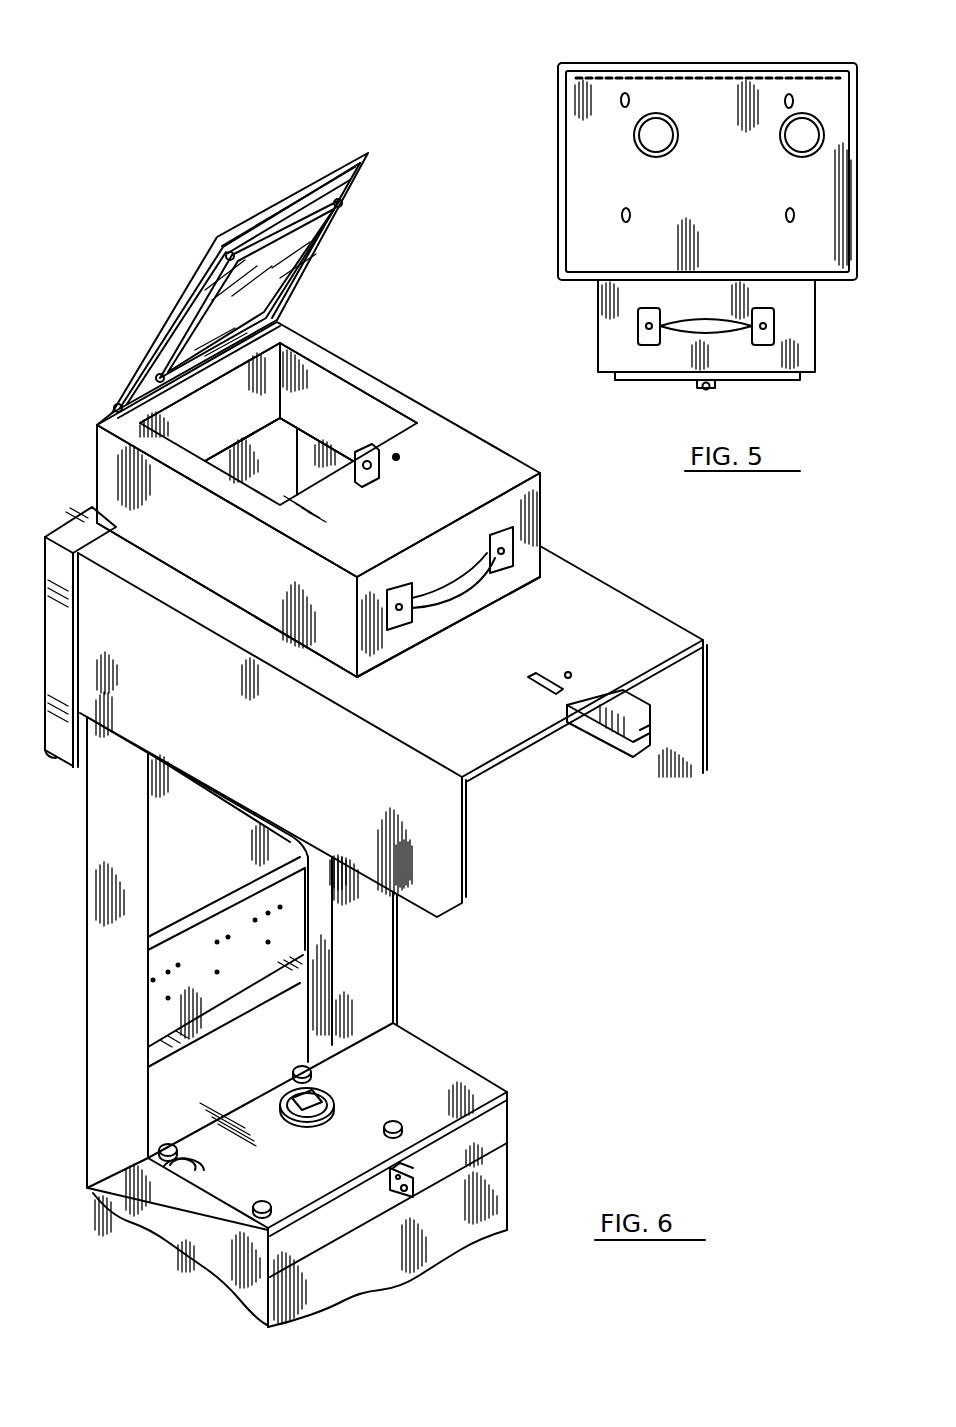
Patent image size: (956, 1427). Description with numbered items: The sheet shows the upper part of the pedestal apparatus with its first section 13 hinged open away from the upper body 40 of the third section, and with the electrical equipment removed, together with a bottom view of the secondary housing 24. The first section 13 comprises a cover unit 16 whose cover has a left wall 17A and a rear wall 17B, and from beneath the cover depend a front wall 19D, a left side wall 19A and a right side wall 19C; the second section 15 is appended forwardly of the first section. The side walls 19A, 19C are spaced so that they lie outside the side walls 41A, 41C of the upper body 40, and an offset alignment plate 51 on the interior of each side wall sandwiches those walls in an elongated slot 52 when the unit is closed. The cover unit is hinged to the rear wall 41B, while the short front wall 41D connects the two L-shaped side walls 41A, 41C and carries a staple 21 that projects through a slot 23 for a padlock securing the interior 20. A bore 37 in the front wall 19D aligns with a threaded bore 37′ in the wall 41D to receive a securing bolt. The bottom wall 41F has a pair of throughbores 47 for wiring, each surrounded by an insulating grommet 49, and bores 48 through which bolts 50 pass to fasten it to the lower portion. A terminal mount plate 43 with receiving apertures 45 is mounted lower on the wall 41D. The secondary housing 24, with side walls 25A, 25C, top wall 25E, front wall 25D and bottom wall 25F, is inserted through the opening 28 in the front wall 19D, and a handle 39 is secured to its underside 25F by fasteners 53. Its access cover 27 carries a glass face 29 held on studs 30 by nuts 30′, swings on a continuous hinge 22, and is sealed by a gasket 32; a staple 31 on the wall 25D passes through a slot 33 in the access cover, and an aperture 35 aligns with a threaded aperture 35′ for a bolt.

In FIG. 6, the first section 13 is at (597, 947).
In FIG. 6, the second section 15 is at (410, 357).
In FIG. 6, the cover unit 16 is at (415, 720).
In FIG. 6, the left wall 17A is at (58, 758).
In FIG. 6, the rear wall 17B is at (58, 533).
In FIG. 6, the left side wall 19A is at (280, 750).
In FIG. 6, the right side wall 19C is at (696, 705).
In FIG. 6, the depending front wall 19D is at (465, 695).
In FIG. 6, the interior 20 is at (428, 985).
In FIG. 6, the staple 21 is at (415, 1183).
In FIG. 6, the continuous hinge 22 is at (97, 423).
In FIG. 6, the slot 23 is at (548, 690).
In FIG. 5, the secondary housing 24 is at (818, 371).
In FIG. 6, the secondary housing 24 is at (342, 347).
In FIG. 6, the side wall 25A is at (232, 555).
In FIG. 6, the side wall 25C is at (351, 428).
In FIG. 6, the front wall 25D is at (380, 545).
In FIG. 6, the top wall 25E is at (242, 428).
In FIG. 5, the bottom wall 25F is at (800, 338).
In FIG. 6, the bottom wall 25F is at (465, 578).
In FIG. 6, the access cover 27 is at (185, 285).
In FIG. 6, the opening 28 is at (170, 572).
In FIG. 6, the glass face 29 is at (272, 276).
In FIG. 6, the studs 30 is at (344, 205).
In FIG. 6, the nuts 30′ is at (139, 393).
In FIG. 6, the staple 31 is at (362, 456).
In FIG. 6, the gasket 32 is at (175, 333).
In FIG. 6, the slot 33 is at (277, 207).
In FIG. 6, the aperture 35 is at (313, 197).
In FIG. 6, the threaded aperture 35′ is at (399, 456).
In FIG. 6, the bore 37 is at (571, 672).
In FIG. 6, the threaded bore 37′ is at (415, 1172).
In FIG. 5, the handle 39 is at (735, 330).
In FIG. 6, the handle 39 is at (482, 578).
In FIG. 6, the upper body 40 is at (309, 1022).
In FIG. 6, the side wall 41A is at (136, 840).
In FIG. 6, the rear wall 41B is at (231, 840).
In FIG. 6, the side wall 41C is at (380, 980).
In FIG. 6, the short front wall 41D is at (354, 1230).
In FIG. 5, the bottom wall 41F is at (713, 175).
In FIG. 6, the bottom wall 41F is at (334, 1165).
In FIG. 6, the terminal mount plate 43 is at (262, 985).
In FIG. 6, the receiving apertures 45 is at (253, 921).
In FIG. 5, the throughbores 47 is at (805, 130).
In FIG. 6, the throughbores 47 is at (320, 1100).
In FIG. 5, the bores 48 is at (623, 108).
In FIG. 5, the insulating grommet 49 is at (657, 115).
In FIG. 6, the insulating grommet 49 is at (330, 1102).
In FIG. 6, the bolts 50 is at (398, 1122).
In FIG. 6, the offset alignment plate 51 is at (632, 748).
In FIG. 6, the elongated slot 52 is at (652, 742).
In FIG. 5, the fasteners 53 is at (768, 325).
In FIG. 6, the fasteners 53 is at (508, 550).